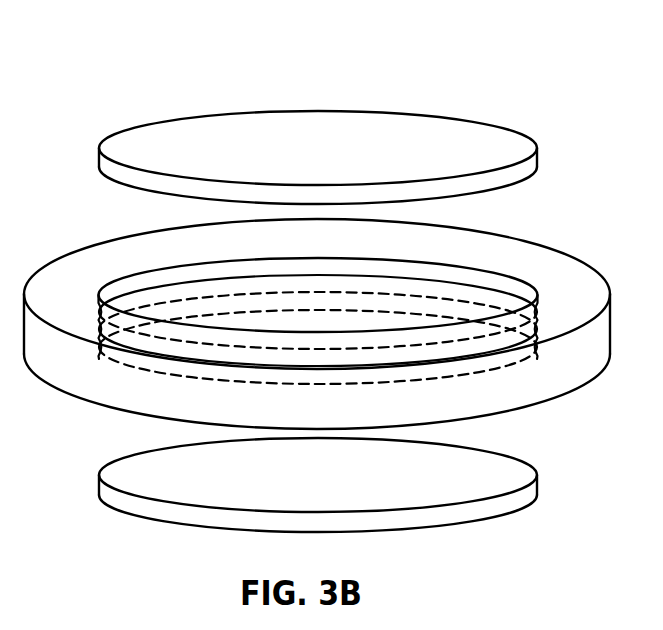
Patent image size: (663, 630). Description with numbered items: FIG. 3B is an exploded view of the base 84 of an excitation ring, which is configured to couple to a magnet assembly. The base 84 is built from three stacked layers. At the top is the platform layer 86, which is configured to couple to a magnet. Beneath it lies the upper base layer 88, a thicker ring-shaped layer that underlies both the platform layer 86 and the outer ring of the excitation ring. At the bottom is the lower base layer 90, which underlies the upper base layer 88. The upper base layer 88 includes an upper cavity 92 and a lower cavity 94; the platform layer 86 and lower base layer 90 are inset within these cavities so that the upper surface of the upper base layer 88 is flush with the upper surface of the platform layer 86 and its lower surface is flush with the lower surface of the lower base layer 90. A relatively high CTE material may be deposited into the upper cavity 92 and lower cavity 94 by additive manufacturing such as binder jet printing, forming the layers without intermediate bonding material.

The base 84 is at (463, 73).
The platform layer 86 is at (331, 168).
The upper base layer 88 is at (332, 251).
The lower base layer 90 is at (331, 497).
The upper cavity 92 is at (503, 272).
The lower cavity 94 is at (503, 423).